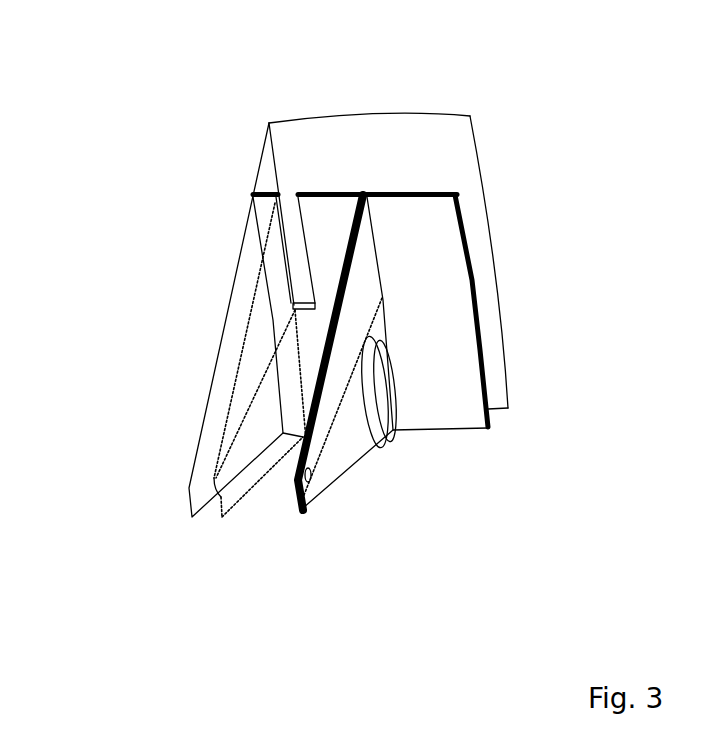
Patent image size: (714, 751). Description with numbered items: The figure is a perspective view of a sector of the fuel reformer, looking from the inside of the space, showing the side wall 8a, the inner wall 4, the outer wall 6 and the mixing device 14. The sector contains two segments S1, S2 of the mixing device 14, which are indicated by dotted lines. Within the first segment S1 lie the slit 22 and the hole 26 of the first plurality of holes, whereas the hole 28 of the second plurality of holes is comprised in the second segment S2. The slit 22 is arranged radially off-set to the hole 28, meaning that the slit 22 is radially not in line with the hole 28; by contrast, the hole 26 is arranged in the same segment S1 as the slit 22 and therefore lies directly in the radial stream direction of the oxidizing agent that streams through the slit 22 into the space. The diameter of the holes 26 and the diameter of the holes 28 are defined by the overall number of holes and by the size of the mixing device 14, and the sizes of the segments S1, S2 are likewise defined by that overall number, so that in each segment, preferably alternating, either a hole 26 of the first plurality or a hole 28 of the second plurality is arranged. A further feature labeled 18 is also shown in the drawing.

The outer wall 6 is at (477, 141).
The inner wall 4 is at (467, 250).
The mixing device 14 is at (348, 268).
The slit 22 is at (292, 226).
The side wall 8a is at (220, 342).
The hole of the second plurality of holes 28 is at (370, 388).
The hole of the first plurality of holes 26 is at (310, 473).
The feed direction 18 is at (482, 305).
The first segment S1 is at (343, 350).
The second segment S2 is at (267, 433).